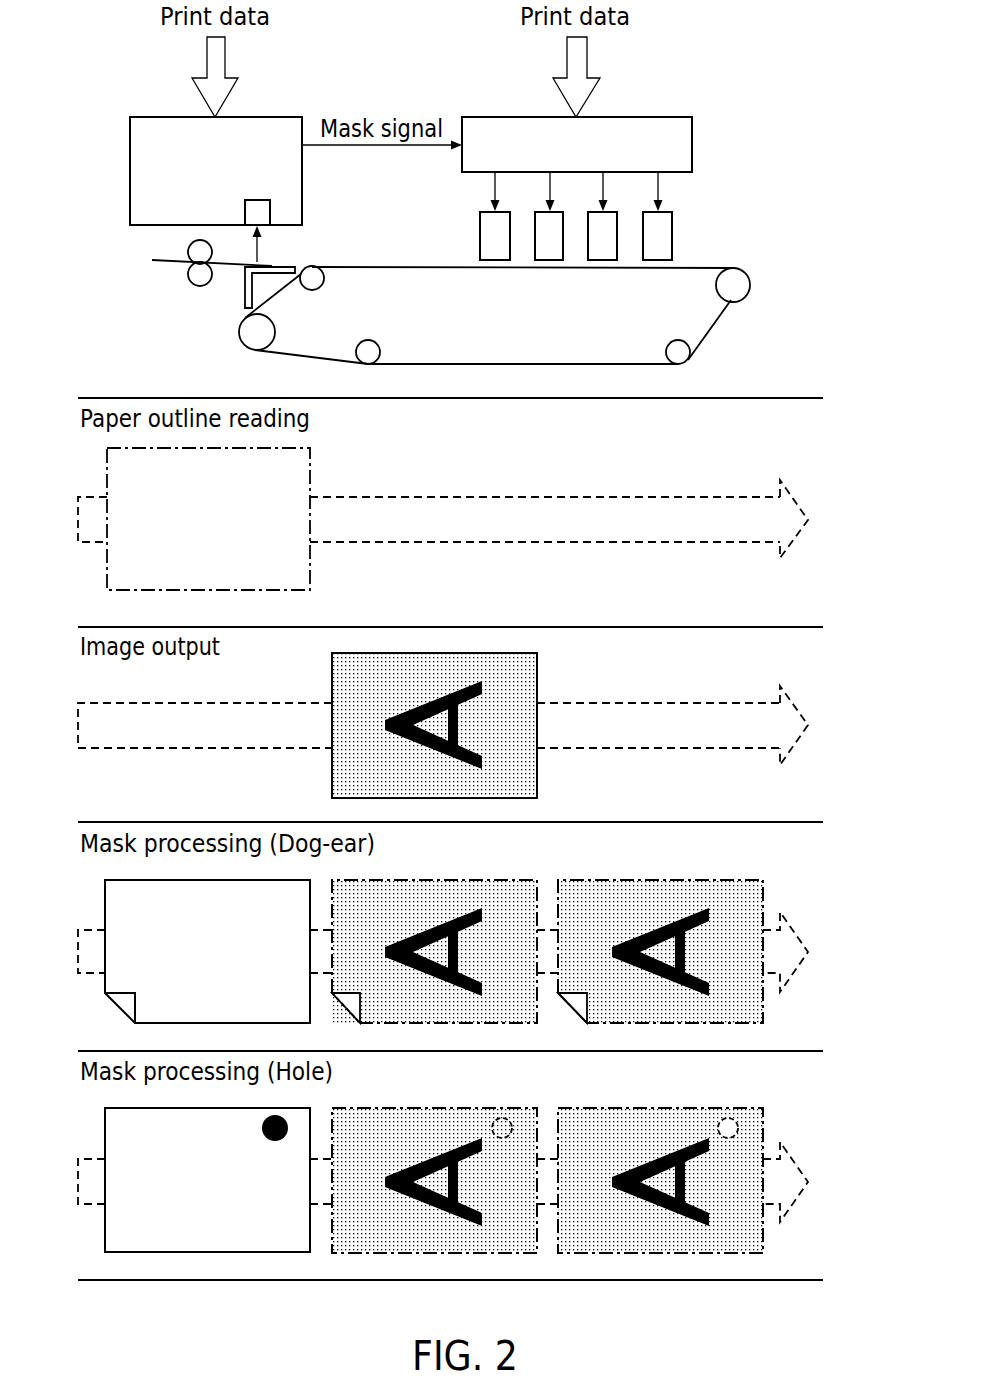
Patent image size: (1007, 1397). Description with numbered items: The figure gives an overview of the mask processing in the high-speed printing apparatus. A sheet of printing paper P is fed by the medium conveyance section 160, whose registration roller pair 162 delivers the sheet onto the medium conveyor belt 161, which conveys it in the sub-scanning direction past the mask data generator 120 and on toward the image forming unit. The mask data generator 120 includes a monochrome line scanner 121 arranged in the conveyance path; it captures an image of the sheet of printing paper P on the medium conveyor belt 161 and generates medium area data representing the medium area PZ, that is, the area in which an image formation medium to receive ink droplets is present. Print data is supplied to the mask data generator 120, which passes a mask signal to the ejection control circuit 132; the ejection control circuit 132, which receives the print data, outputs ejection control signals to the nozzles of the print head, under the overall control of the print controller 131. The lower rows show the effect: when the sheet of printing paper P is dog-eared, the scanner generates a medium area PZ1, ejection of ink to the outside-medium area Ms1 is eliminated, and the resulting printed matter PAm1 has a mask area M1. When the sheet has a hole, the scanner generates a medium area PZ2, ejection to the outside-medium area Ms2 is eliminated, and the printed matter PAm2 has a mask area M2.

The mask data generator 120 is at (278, 117).
The monochrome line scanner 121 is at (272, 212).
The ejection control circuit 132 is at (668, 117).
The print controller 131 is at (690, 229).
The sheet of printing paper P is at (170, 263).
The medium conveyance section 160 is at (448, 305).
The registration roller pair 162 is at (202, 286).
The medium conveyor belt 161 is at (722, 325).
The medium area PZ is at (310, 480).
The medium area PZ1 is at (105, 900).
The printed matter after mask processing PAm1 is at (671, 960).
The outside-medium area Ms1 is at (343, 1017).
The mask area M1 is at (570, 1017).
The medium area PZ2 is at (105, 1128).
The printed matter after mask processing PAm2 is at (685, 1159).
The outside-medium area Ms2 is at (527, 1082).
The mask area M2 is at (718, 1118).